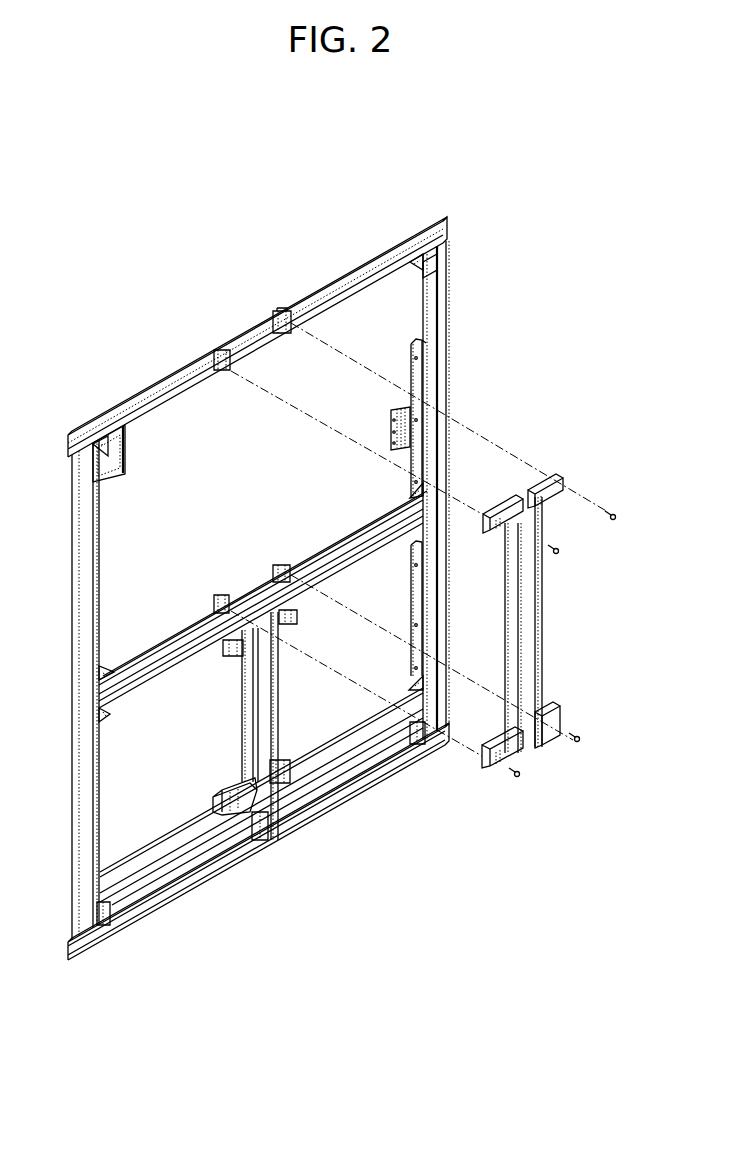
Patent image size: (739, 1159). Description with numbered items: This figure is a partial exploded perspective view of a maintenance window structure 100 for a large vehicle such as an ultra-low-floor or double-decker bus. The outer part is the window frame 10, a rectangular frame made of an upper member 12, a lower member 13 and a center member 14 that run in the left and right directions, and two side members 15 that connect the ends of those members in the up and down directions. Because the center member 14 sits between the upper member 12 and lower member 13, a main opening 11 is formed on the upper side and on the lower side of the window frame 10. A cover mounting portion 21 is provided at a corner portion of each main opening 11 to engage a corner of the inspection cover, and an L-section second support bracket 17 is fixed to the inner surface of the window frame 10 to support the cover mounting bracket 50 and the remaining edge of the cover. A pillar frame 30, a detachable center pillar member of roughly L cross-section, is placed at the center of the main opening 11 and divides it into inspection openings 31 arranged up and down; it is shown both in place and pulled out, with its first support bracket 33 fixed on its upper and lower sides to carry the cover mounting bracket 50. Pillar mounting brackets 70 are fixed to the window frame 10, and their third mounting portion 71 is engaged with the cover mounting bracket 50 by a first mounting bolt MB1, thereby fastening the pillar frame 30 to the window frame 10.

The maintenance window structure 100 is at (235, 160).
The window frame 10 is at (460, 307).
The main opening 11 is at (115, 585).
The upper member 12 is at (125, 397).
The lower member 13 is at (132, 882).
The center member 14 is at (100, 710).
The side member 15 is at (73, 541).
The second support bracket 17 is at (372, 283).
The cover mounting portion 21 is at (100, 446).
The pillar frame 30 is at (547, 640).
The inspection opening 31 is at (278, 762).
The first support bracket 33 is at (540, 612).
The cover mounting bracket 50 is at (507, 505).
The pillar mounting bracket 70 is at (283, 316).
The third mounting portion 71 is at (273, 320).
The first mounting bolt MB1 is at (559, 552).